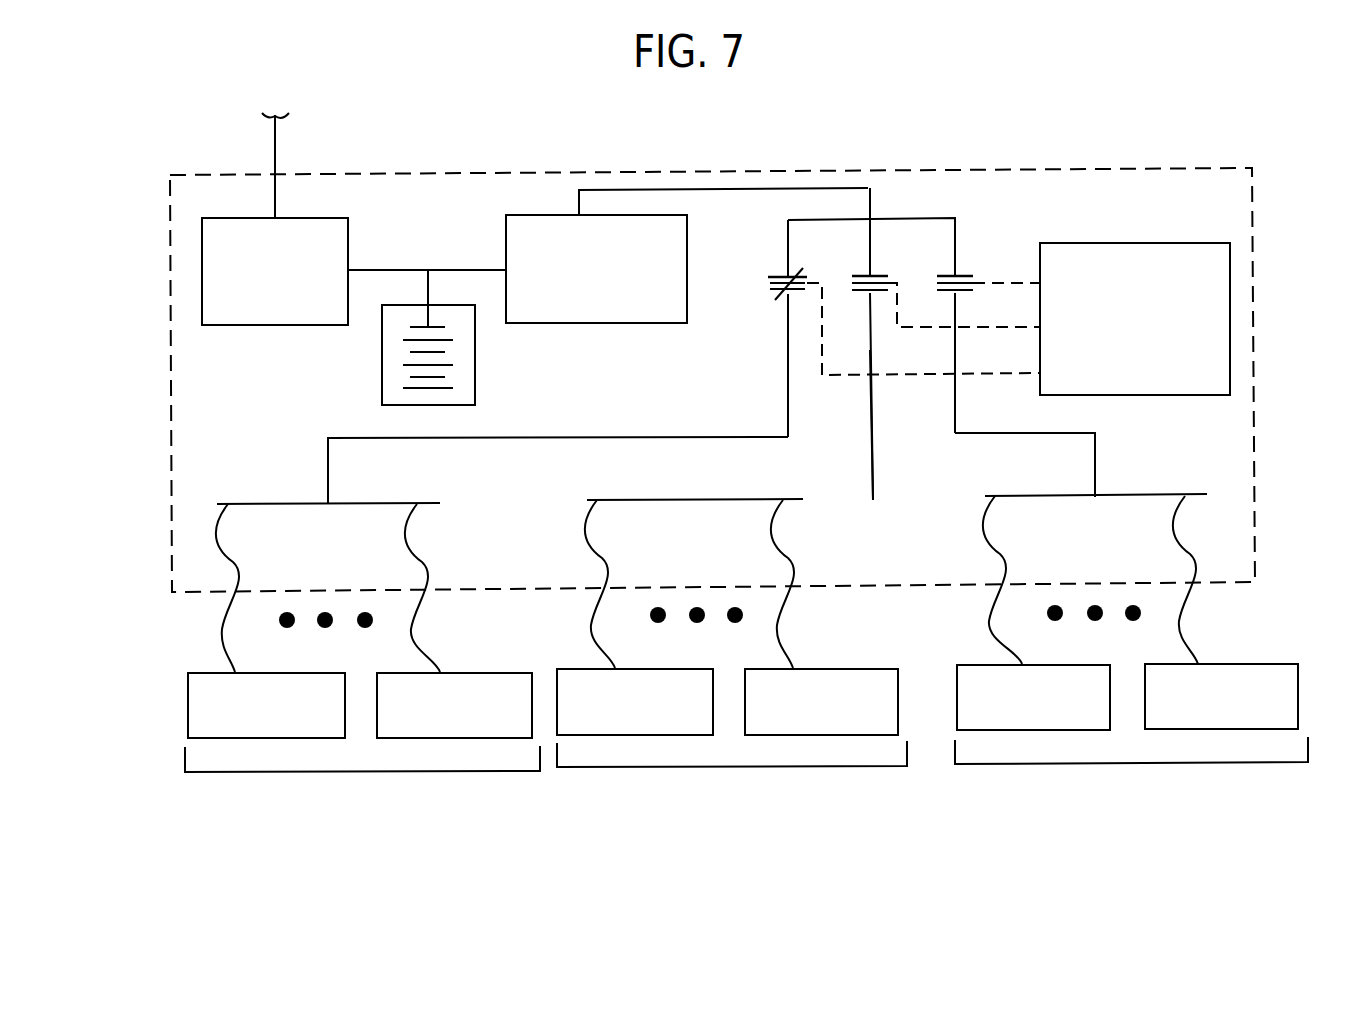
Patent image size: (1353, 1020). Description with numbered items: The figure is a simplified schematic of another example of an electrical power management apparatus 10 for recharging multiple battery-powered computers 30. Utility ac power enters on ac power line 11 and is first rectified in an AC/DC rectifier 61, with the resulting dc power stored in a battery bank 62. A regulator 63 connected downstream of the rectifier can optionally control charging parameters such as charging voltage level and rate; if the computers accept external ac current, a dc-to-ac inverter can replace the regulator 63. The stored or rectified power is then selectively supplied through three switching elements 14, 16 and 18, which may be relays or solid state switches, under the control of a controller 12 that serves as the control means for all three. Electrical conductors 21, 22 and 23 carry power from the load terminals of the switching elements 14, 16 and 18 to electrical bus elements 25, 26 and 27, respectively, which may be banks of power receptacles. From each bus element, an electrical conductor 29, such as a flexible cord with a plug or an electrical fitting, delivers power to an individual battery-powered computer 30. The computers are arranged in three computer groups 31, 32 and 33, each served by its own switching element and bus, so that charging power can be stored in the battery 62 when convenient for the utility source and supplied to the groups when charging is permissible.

The electrical power management apparatus 10 is at (908, 152).
The ac power line 11 is at (277, 149).
The controller 12 is at (1130, 242).
The switching element 14 is at (763, 297).
The switching element 16 is at (858, 268).
The switching element 18 is at (945, 268).
The electrical conductor 21 is at (495, 438).
The electrical conductor 22 is at (870, 477).
The electrical conductor 23 is at (1095, 470).
The electrical bus element 25 is at (263, 504).
The electrical bus element 26 is at (633, 500).
The electrical bus element 27 is at (1035, 496).
The electrical conductor 29 is at (242, 578).
The battery-powered computer 30 is at (188, 705).
The computer group 31 is at (362, 772).
The computer group 32 is at (732, 767).
The computer group 33 is at (1132, 764).
The AC/DC rectifier 61 is at (275, 325).
The battery bank 62 is at (382, 364).
The regulator 63 is at (573, 323).